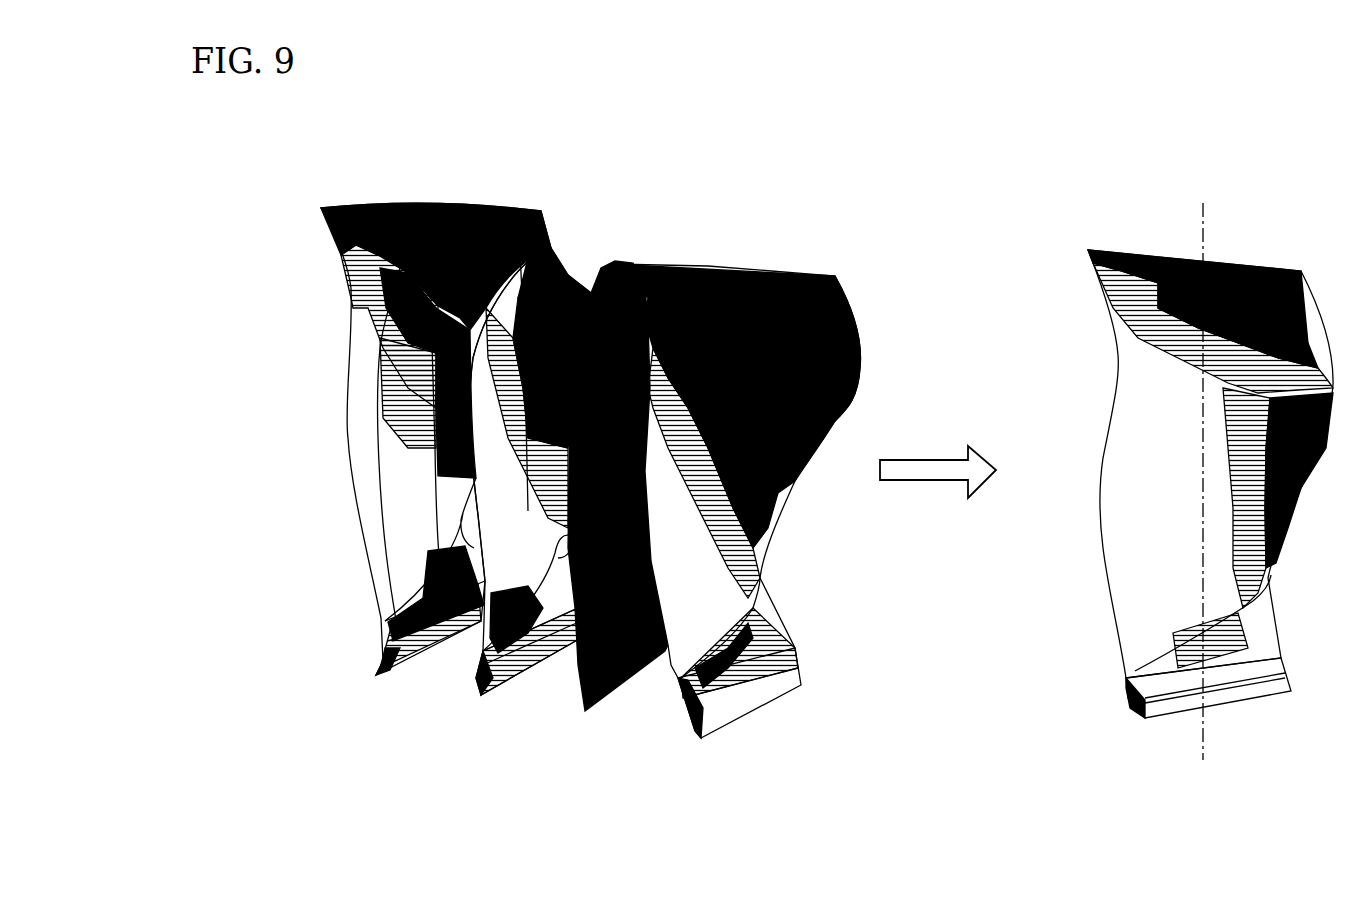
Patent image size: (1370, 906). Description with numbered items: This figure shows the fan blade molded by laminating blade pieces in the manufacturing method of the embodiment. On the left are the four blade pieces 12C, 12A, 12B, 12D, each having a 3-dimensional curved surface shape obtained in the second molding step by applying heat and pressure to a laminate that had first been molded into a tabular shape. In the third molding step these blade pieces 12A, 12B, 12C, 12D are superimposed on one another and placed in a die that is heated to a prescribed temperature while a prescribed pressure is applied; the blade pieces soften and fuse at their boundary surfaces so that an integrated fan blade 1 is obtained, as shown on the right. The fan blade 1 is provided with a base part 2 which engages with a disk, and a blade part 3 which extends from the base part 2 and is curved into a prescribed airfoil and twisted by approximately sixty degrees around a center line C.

The blade piece 12C is at (380, 223).
The blade piece 12A is at (550, 267).
The blade piece 12B is at (597, 277).
The blade piece 12D is at (718, 283).
The fan blade 1 is at (1173, 476).
The base part 2 is at (1237, 683).
The blade part 3 is at (1117, 508).
The center line C is at (1200, 238).